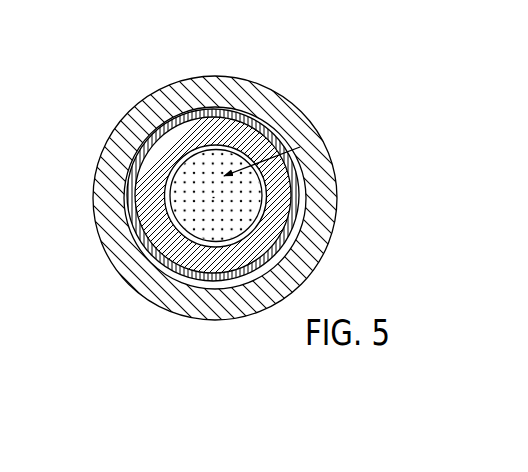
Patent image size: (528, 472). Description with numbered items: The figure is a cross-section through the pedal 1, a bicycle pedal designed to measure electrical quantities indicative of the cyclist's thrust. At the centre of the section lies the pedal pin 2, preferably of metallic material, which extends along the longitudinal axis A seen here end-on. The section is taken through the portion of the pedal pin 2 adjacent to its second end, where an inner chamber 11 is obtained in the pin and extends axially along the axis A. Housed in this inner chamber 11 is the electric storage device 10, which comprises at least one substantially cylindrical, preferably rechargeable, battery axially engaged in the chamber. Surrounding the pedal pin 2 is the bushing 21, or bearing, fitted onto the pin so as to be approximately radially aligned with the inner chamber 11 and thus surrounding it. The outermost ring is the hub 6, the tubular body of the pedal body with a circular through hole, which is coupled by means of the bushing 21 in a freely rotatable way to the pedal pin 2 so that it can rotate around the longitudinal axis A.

The hub 6 is at (112, 125).
The bushing 21 is at (202, 109).
The pedal pin 2 is at (244, 135).
The inner chamber 11 is at (199, 232).
The electric storage device 10 is at (242, 212).
The longitudinal axis A is at (304, 145).
The pedal 1 is at (216, 198).